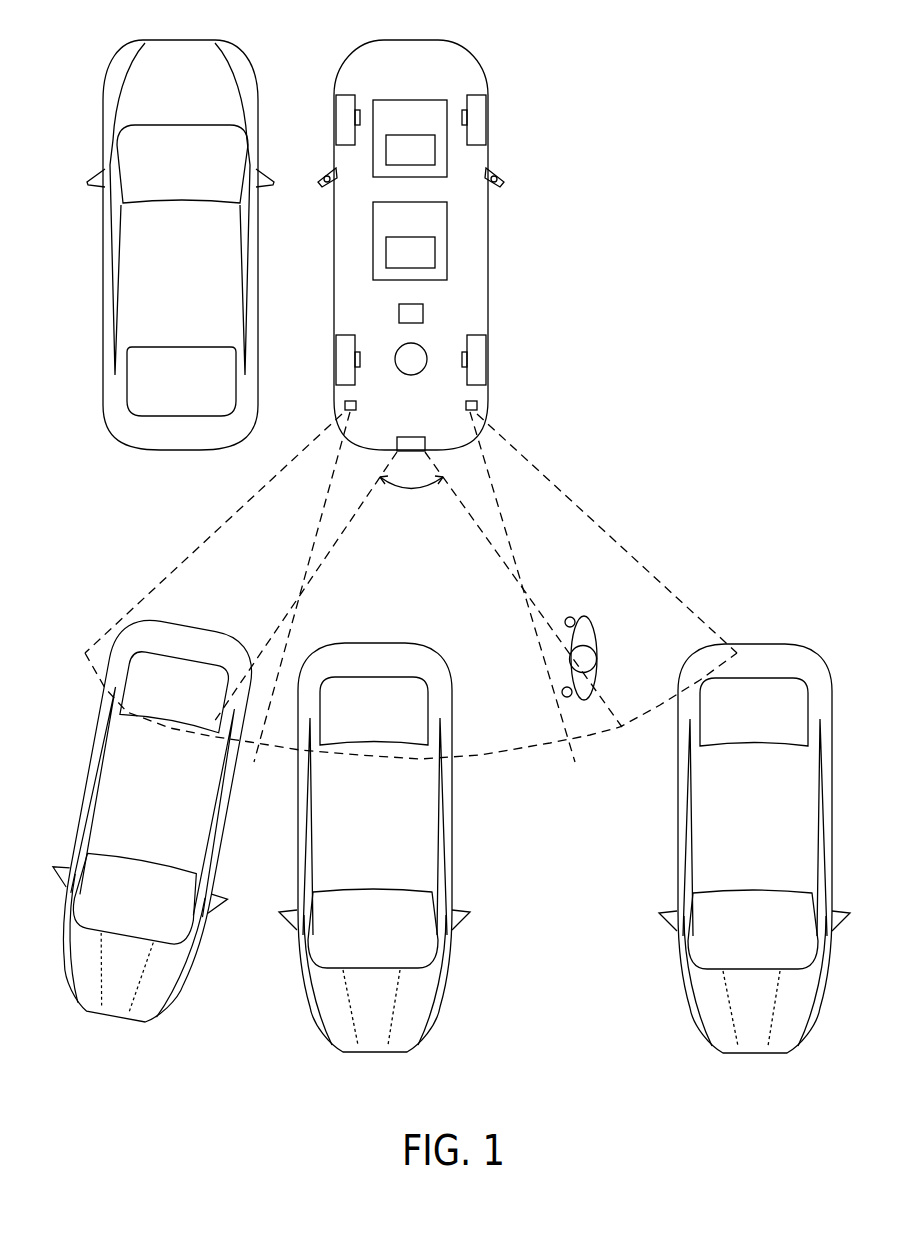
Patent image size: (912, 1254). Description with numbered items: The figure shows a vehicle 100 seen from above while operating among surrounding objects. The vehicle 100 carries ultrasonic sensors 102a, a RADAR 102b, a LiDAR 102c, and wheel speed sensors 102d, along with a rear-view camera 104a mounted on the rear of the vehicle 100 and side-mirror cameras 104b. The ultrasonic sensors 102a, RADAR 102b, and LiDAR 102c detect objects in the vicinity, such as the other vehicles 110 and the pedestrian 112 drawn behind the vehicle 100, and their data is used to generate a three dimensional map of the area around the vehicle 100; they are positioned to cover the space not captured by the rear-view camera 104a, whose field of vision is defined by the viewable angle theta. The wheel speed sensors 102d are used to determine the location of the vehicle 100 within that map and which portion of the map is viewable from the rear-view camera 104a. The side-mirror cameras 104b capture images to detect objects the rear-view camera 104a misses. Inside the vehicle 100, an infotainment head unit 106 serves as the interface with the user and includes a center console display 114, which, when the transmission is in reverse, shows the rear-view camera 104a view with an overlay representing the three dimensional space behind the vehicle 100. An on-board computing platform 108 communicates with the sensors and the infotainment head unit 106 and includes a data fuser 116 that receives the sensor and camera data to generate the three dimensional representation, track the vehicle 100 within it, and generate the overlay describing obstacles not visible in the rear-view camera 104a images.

The vehicle 100 is at (463, 52).
The ultrasonic sensors 102a is at (347, 404).
The RADAR 102b is at (399, 313).
The LiDAR 102c is at (427, 359).
The wheel speed sensors 102d is at (355, 118).
The rear-view camera 104a is at (411, 437).
The side-mirror cameras 104b is at (500, 180).
The infotainment head unit 106 is at (410, 89).
The on-board computing platform 108 is at (465, 241).
The other vehicles 110 is at (216, 624).
The pedestrians 112 is at (597, 638).
The center console display 114 is at (396, 162).
The data fuser 116 is at (396, 265).